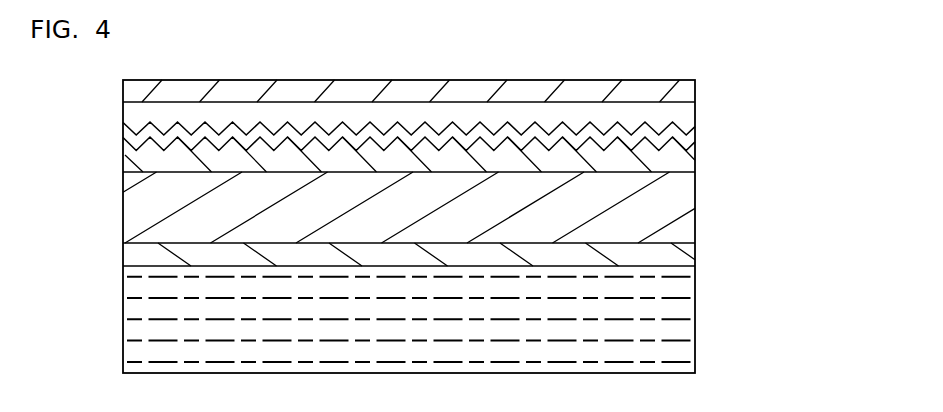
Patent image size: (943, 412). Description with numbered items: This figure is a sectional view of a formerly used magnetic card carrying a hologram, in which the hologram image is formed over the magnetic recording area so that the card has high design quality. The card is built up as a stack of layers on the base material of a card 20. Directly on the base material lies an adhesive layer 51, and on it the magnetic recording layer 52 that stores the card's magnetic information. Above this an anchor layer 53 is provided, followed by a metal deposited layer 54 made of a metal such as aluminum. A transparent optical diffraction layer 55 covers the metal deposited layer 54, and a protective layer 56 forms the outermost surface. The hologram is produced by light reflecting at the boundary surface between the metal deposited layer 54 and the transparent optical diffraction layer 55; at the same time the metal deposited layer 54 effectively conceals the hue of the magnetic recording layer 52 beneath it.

The protective layer 56 is at (680, 92).
The transparent optical diffraction layer 55 is at (682, 117).
The metal deposited layer 54 is at (685, 140).
The anchor layer 53 is at (685, 160).
The magnetic recording layer 52 is at (682, 207).
The adhesive layer 51 is at (670, 255).
The base material of a card 20 is at (677, 330).